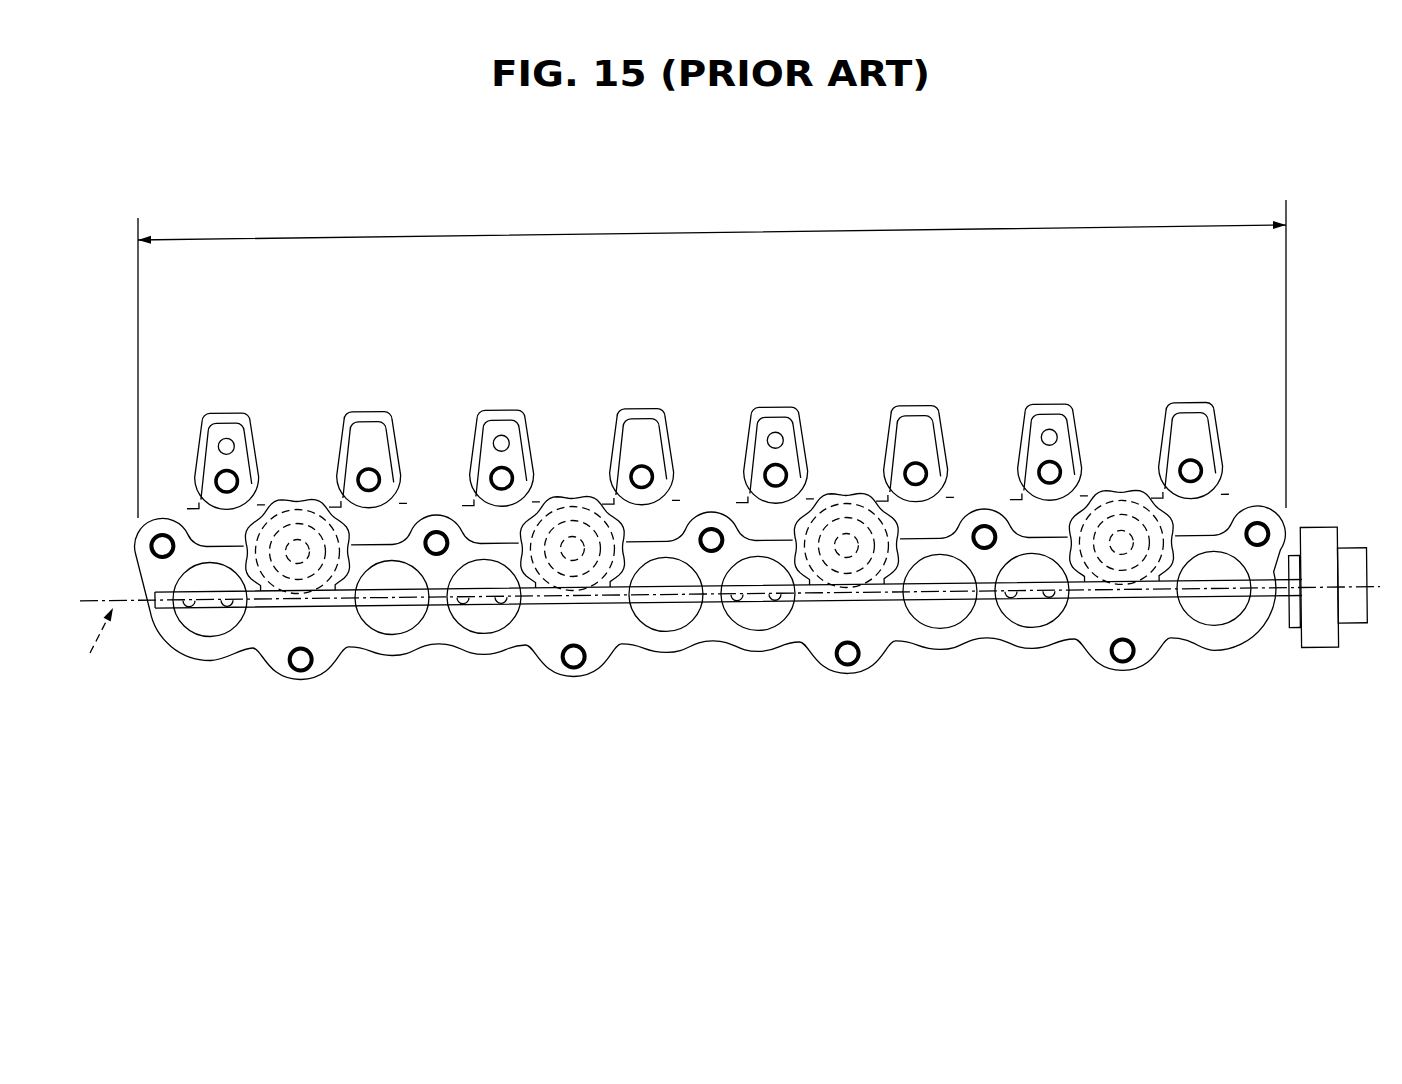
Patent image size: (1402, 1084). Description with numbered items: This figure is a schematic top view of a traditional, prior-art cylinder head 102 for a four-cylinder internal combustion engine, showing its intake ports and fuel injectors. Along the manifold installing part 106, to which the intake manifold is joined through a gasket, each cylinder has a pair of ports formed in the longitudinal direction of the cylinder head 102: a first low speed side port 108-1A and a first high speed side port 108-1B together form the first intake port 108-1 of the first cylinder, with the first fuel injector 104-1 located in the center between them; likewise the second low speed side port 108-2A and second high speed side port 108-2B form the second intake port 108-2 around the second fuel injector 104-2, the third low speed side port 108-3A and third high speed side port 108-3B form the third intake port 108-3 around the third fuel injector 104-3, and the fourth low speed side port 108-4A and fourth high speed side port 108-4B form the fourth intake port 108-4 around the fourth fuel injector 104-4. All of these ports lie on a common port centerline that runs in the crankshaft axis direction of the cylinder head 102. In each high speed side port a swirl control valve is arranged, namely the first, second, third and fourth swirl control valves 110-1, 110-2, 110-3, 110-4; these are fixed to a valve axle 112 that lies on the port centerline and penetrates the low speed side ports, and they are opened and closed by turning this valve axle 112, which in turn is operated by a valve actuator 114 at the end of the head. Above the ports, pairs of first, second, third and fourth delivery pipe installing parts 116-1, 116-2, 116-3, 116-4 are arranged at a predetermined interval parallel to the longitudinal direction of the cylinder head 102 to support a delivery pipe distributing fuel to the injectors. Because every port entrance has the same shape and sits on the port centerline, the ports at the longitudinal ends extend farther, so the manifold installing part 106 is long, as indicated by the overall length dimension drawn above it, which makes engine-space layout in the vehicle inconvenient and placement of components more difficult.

The cylinder head 102 is at (1132, 200).
The first fuel injector 104-1 is at (305, 518).
The second fuel injector 104-2 is at (576, 513).
The third fuel injector 104-3 is at (848, 510).
The fourth fuel injector 104-4 is at (1122, 510).
The manifold installing part 106 is at (343, 637).
The first intake port 108-1 is at (329, 700).
The first low speed side port 108-1A is at (387, 623).
The first high speed side port 108-1B is at (218, 627).
The second intake port 108-2 is at (581, 718).
The second low speed side port 108-2A is at (650, 621).
The second high speed side port 108-2B is at (481, 627).
The third intake port 108-3 is at (850, 694).
The third low speed side port 108-3A is at (922, 617).
The third high speed side port 108-3B is at (752, 617).
The fourth intake port 108-4 is at (1168, 693).
The fourth low speed side port 108-4A is at (1197, 613).
The fourth high speed side port 108-4B is at (1043, 617).
The first swirl control valve 110-1 is at (207, 605).
The second swirl control valve 110-2 is at (494, 605).
The third swirl control valve 110-3 is at (767, 605).
The fourth swirl control valve 110-4 is at (1027, 600).
The valve axle 112 is at (1278, 600).
The valve actuator 114 is at (1323, 640).
The first delivery pipe installing part 116-1 is at (219, 432).
The second delivery pipe installing part 116-2 is at (500, 432).
The third delivery pipe installing part 116-3 is at (775, 432).
The fourth delivery pipe installing part 116-4 is at (1052, 432).